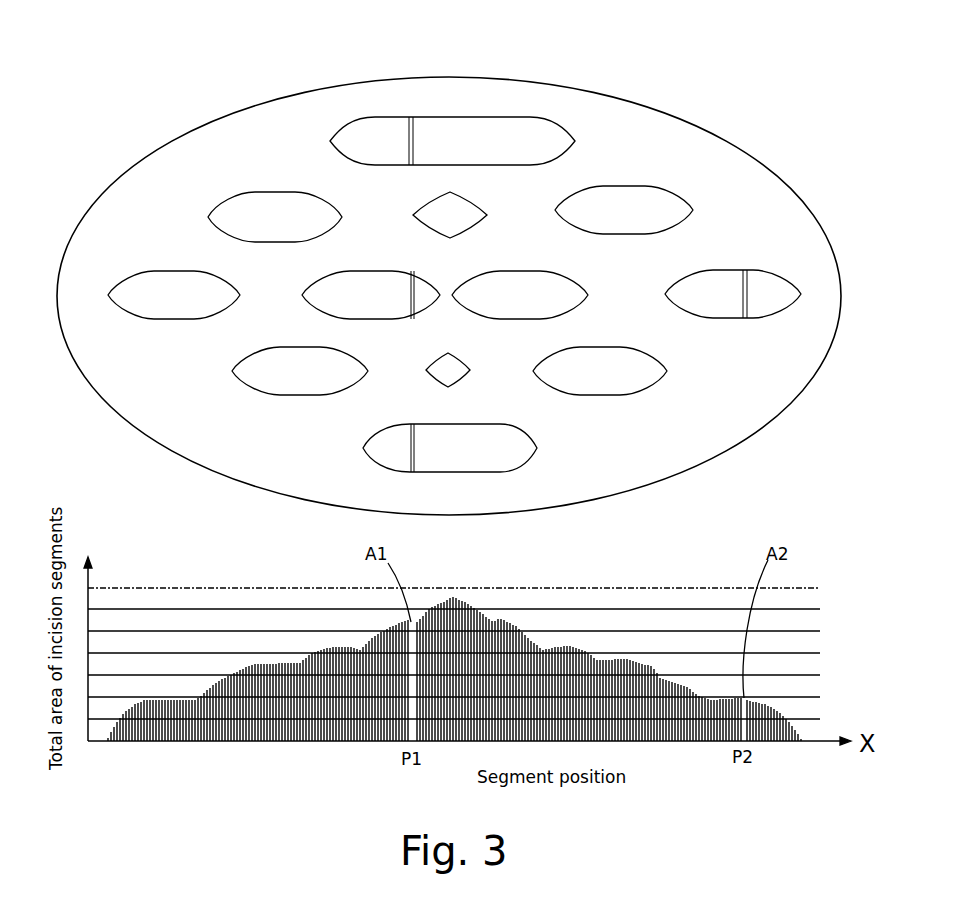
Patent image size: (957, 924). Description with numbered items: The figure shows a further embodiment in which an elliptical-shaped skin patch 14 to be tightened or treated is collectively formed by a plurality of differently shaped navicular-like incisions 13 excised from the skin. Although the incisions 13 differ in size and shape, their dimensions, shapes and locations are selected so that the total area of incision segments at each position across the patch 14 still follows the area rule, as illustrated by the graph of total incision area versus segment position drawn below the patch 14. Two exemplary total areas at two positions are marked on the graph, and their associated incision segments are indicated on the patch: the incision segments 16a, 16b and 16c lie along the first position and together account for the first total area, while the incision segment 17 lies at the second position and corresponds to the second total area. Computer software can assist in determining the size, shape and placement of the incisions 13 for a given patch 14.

The skin patch 14 is at (692, 122).
The incisions 13 is at (162, 293).
The incision segment 16a is at (409, 117).
The incision segment 16b is at (411, 274).
The incision segment 16c is at (408, 472).
The incision segment 17 is at (745, 318).